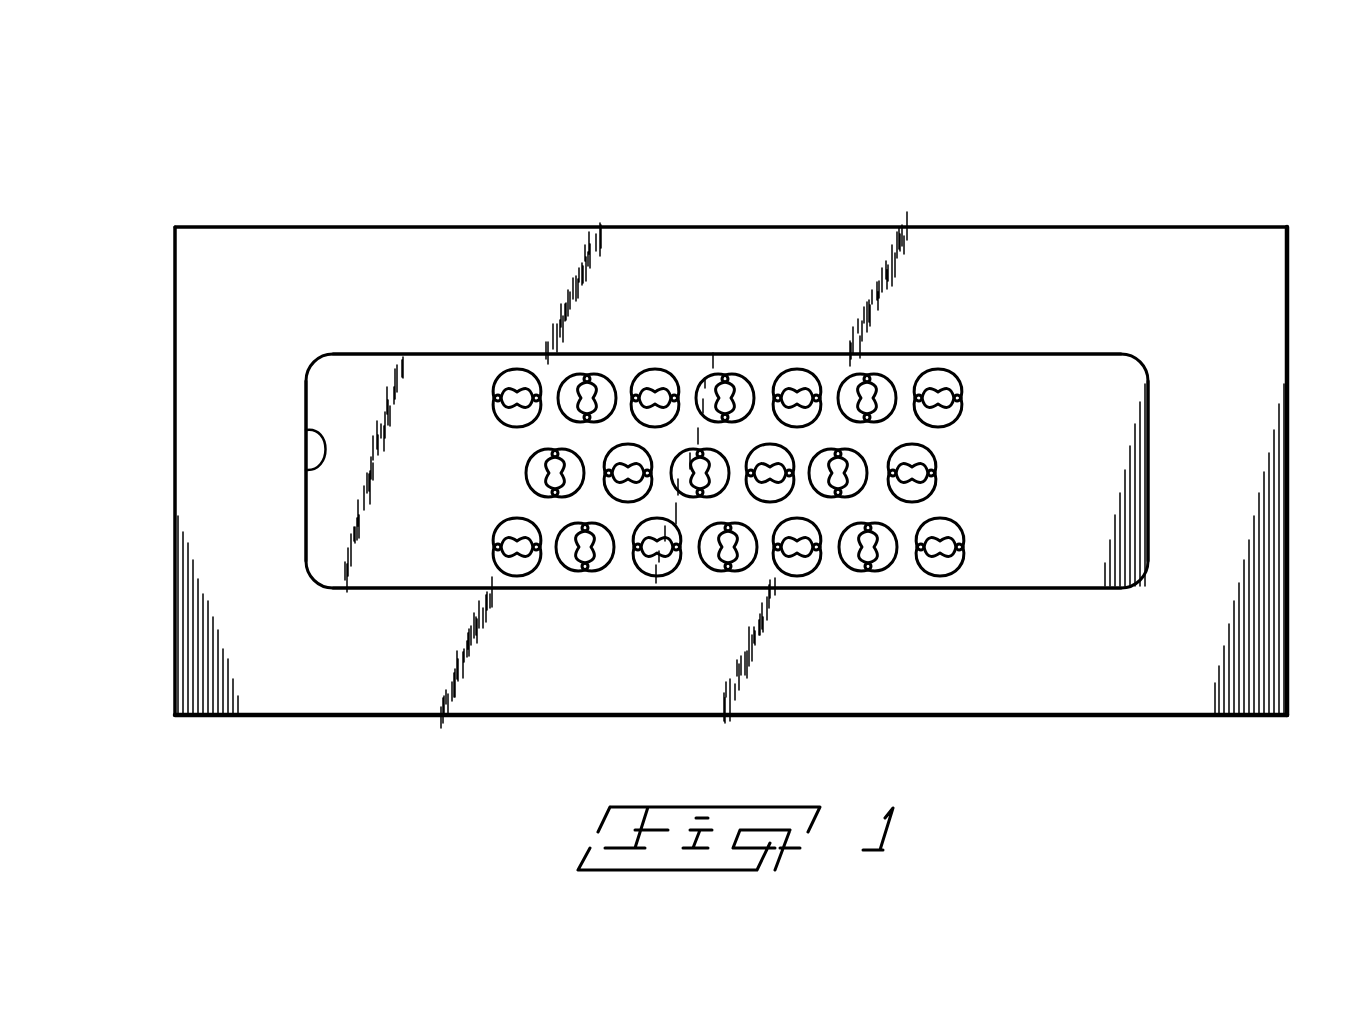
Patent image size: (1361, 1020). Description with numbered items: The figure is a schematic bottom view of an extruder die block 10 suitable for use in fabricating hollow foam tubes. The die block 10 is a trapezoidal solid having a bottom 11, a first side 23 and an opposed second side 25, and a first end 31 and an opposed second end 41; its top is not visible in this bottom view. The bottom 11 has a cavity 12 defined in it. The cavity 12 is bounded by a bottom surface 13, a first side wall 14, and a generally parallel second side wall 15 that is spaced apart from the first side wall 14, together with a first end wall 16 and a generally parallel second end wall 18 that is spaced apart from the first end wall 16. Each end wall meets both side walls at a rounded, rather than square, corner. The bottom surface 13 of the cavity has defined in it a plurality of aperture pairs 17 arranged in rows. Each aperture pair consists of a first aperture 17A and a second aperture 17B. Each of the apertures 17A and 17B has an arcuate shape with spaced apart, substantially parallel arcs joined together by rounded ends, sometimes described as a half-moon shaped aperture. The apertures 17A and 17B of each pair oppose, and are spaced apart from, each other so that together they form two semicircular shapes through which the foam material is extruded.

The extruder die block 10 is at (1108, 185).
The bottom 11 is at (1217, 637).
The cavity 12 is at (1058, 390).
The bottom surface 13 is at (1028, 538).
The first side wall 14 is at (447, 356).
The second side wall 15 is at (425, 588).
The first end wall 16 is at (1147, 452).
The aperture pairs 17 is at (660, 393).
The first aperture 17A is at (845, 565).
The second aperture 17B is at (893, 565).
The second end wall 18 is at (306, 430).
The first side 23 is at (832, 227).
The second side 25 is at (1153, 715).
The first end 31 is at (1288, 493).
The second end 41 is at (175, 623).